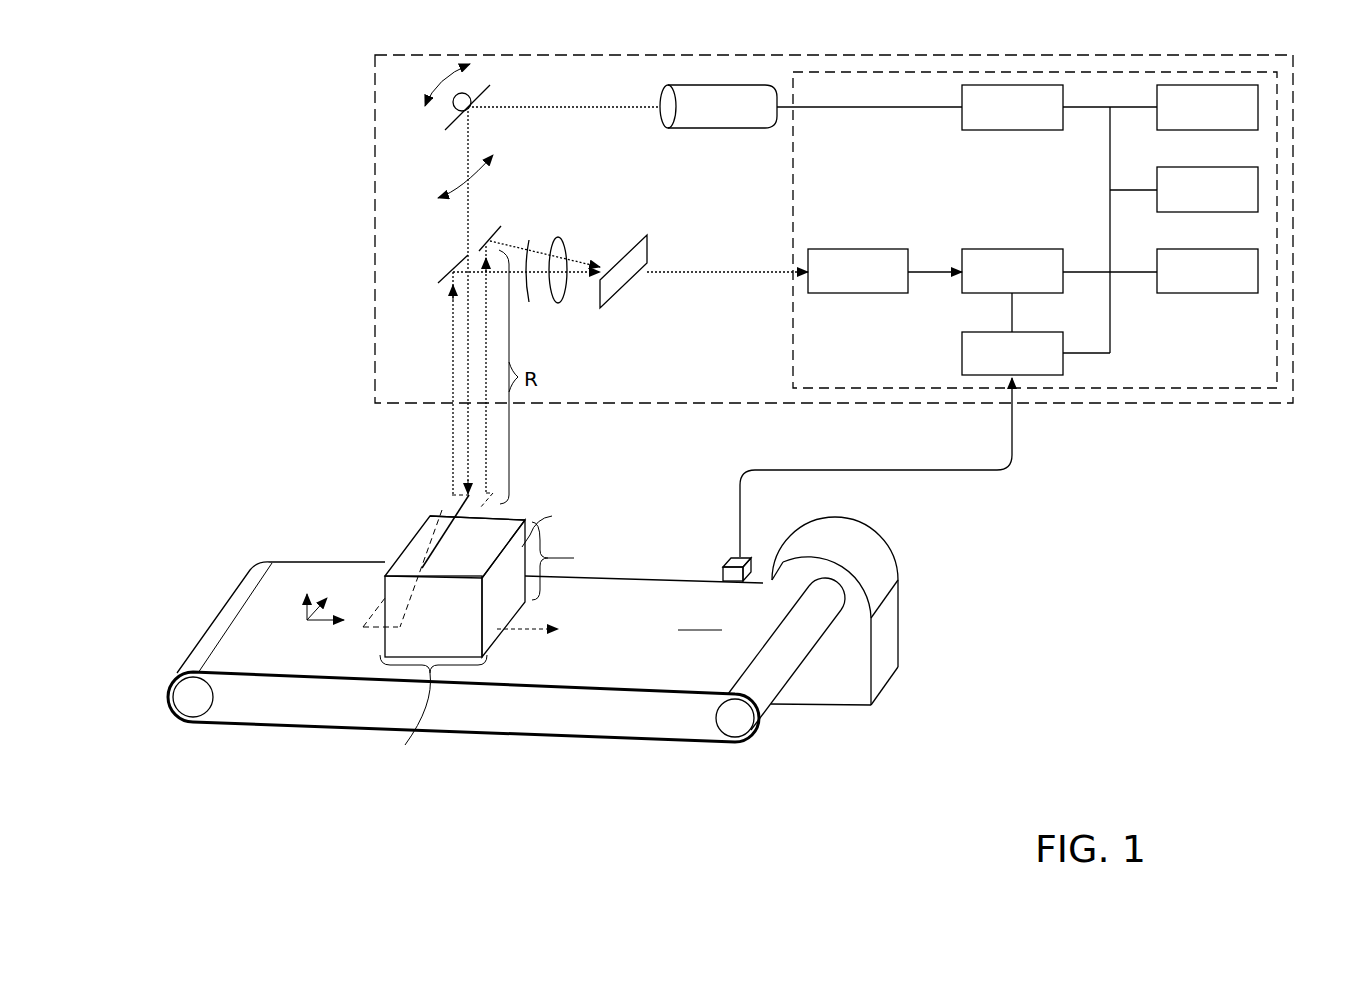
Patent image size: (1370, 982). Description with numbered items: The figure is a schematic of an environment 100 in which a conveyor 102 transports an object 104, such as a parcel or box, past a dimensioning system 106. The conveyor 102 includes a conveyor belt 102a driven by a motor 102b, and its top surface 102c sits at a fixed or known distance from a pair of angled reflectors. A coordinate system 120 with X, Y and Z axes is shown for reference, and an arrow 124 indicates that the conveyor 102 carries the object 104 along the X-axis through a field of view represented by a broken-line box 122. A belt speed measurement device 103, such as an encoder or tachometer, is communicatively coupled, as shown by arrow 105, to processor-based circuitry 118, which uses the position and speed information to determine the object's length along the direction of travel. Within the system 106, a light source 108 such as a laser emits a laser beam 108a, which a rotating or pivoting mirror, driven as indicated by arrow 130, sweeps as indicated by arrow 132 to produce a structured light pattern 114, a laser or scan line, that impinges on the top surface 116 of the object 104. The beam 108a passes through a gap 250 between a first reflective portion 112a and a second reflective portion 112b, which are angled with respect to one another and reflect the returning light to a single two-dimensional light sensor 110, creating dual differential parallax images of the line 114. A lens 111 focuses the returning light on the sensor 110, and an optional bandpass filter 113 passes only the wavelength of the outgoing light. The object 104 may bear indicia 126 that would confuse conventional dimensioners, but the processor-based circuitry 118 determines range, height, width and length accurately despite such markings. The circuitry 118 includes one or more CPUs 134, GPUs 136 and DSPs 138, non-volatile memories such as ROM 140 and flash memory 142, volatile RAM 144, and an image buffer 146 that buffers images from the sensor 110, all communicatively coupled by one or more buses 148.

The environment 100 is at (256, 118).
The conveyor 102 is at (553, 672).
The conveyor belt 102a is at (232, 607).
The motor 102b is at (900, 615).
The top surface of the conveyor 102c is at (463, 673).
The belt speed measurement device 103 is at (724, 571).
The object 104 is at (448, 643).
The communicative coupling 105 is at (878, 470).
The system 106 is at (375, 100).
The light source 108 is at (718, 85).
The laser beam 108a is at (548, 105).
The light sensor 110 is at (620, 295).
The lens 111 is at (566, 241).
The first reflective portion 112a is at (452, 268).
The second reflective portion 112b is at (489, 238).
The bandpass filter 113 is at (531, 302).
The structured light pattern 114 is at (432, 530).
The surface of the object 116 is at (513, 510).
The processor-based circuitry 118 is at (1128, 72).
The coordinate system 120 is at (292, 613).
The field of view 122 is at (382, 630).
The direction of travel arrow 124 is at (536, 704).
The indicia 126 is at (452, 504).
The mirror rotation arrow 130 is at (440, 82).
The beam sweep arrow 132 is at (465, 185).
The microprocessors (CPUs) 134 is at (1012, 85).
The graphical processing units (GPUs) 136 is at (1012, 249).
The digital signal processors (DSPs) 138 is at (1036, 376).
The read-only memory (ROM) 140 is at (1207, 85).
The flash memory 142 is at (1258, 272).
The random access memory (RAM) 144 is at (1258, 190).
The image buffer 146 is at (858, 293).
The bus 148 is at (1110, 183).
The gap 250 is at (466, 256).